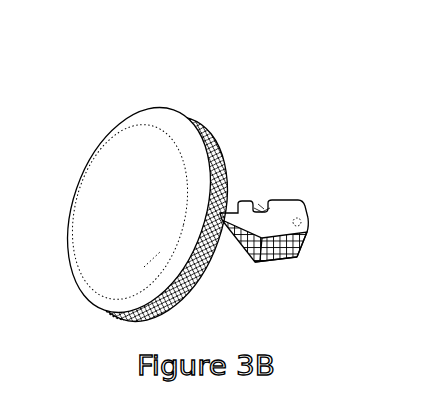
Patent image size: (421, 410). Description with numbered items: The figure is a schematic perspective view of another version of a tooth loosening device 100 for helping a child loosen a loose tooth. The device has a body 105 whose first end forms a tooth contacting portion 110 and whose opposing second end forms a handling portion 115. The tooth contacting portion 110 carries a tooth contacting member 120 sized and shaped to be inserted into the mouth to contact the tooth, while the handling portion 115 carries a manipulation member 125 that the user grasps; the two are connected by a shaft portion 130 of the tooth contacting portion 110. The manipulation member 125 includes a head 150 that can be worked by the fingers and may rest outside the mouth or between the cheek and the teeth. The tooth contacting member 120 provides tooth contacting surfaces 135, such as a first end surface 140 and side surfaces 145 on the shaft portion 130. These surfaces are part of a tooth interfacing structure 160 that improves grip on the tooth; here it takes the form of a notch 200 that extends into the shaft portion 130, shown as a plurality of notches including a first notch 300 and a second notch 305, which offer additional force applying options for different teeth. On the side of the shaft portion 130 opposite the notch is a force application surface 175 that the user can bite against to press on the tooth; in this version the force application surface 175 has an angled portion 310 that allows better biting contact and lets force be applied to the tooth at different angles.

The tooth loosening device 100 is at (200, 175).
The body 105 is at (289, 76).
The tooth contacting portion 110 is at (295, 136).
The handling portion 115 is at (133, 186).
The tooth contacting member 120 is at (276, 116).
The manipulation member 125 is at (77, 163).
The shaft portion 130 is at (302, 192).
The tooth contacting surfaces 135 is at (320, 209).
The first end surface 140 is at (312, 229).
The side surfaces 145 is at (314, 244).
The head 150 is at (75, 283).
The tooth interfacing structure 160 is at (258, 175).
The force application surface 175 is at (288, 259).
The notch 200 is at (279, 172).
The first notch 300 is at (271, 194).
The second notch 305 is at (226, 192).
The angled portion 310 is at (243, 287).